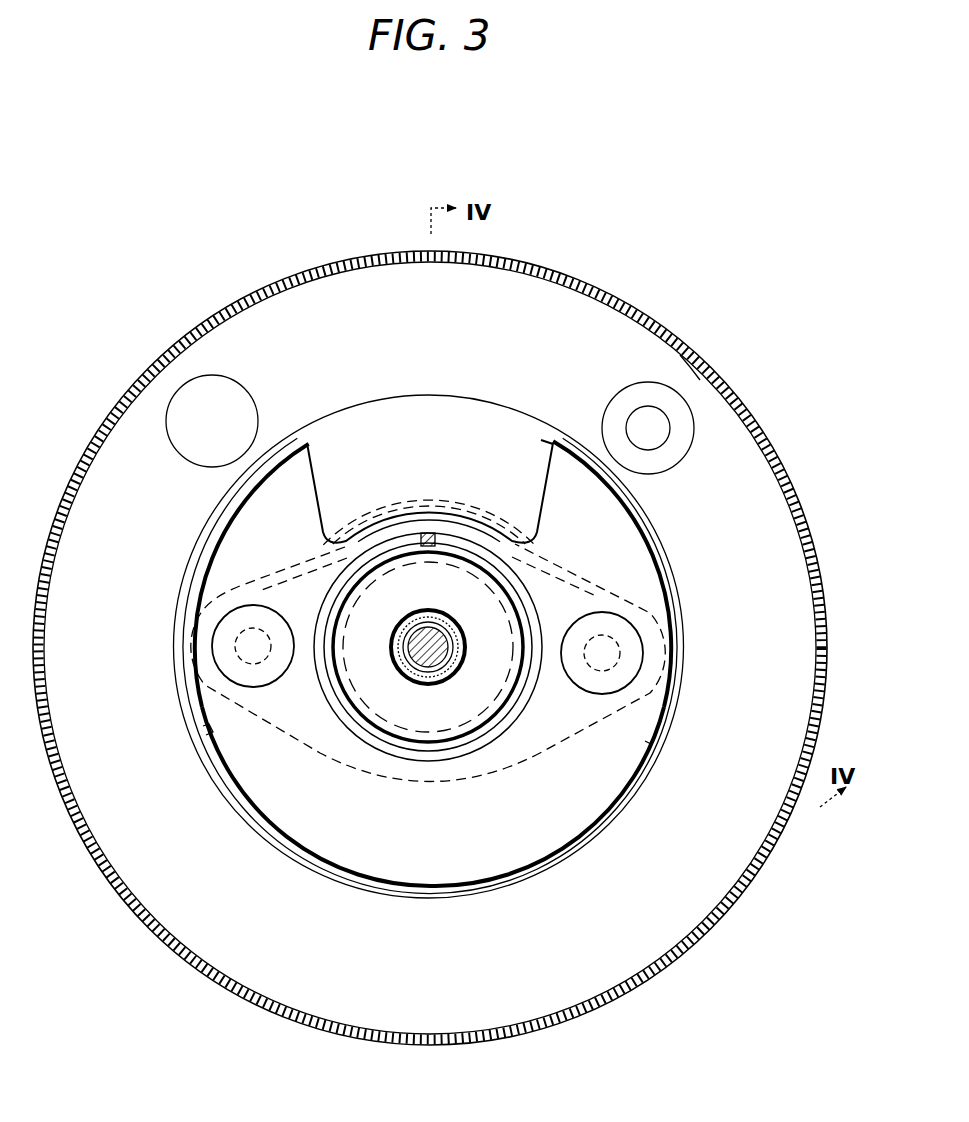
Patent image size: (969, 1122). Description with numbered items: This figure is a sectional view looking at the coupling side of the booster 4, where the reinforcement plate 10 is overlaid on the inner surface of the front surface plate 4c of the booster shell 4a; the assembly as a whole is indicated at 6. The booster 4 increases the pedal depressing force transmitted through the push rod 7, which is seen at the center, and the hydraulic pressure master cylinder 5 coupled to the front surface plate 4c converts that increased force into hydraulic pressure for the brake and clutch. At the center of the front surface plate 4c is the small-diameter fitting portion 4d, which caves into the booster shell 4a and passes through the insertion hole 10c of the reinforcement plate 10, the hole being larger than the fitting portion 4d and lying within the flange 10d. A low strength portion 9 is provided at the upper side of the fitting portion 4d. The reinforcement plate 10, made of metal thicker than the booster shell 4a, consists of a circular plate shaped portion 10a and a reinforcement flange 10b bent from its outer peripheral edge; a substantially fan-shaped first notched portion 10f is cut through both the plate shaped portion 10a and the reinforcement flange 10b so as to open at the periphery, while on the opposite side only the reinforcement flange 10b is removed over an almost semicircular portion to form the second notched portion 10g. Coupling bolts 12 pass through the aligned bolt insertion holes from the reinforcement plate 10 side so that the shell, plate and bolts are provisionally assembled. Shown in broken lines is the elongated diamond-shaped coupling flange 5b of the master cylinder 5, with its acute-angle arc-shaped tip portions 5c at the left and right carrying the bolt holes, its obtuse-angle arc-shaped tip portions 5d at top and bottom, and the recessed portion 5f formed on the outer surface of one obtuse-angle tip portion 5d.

The booster 4 is at (623, 292).
The booster shell 4a is at (684, 356).
The front surface plate 4c is at (360, 426).
The fitting portion 4d is at (372, 697).
The hydraulic pressure master cylinder 5 is at (614, 574).
The coupling flange 5b is at (565, 738).
The arc-shaped tip portions with an acute angle 5c is at (656, 616).
The arc-shaped tip portions with an obtuse angle 5d is at (431, 782).
The recessed portion 5f is at (292, 560).
The brush holder assembly 6 is at (444, 151).
The push rod 7 is at (433, 628).
The low strength portion 9 is at (435, 498).
The reinforcement plate 10 is at (683, 700).
The plate shaped portion 10a is at (302, 812).
The reinforcement flange 10b is at (197, 596).
The insertion hole 10c is at (397, 567).
The flange 10d is at (490, 583).
The first notched portion 10f is at (548, 468).
The second notched portion 10g is at (644, 749).
The coupling bolts 12 is at (627, 655).